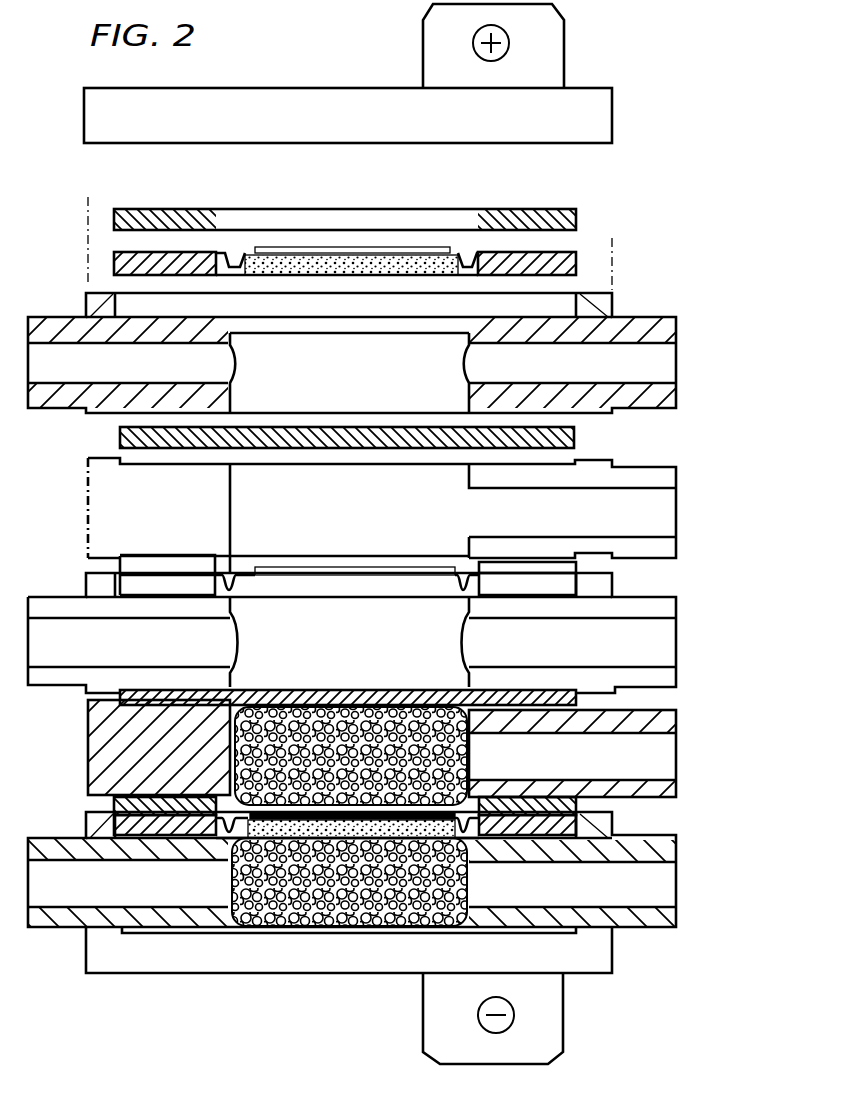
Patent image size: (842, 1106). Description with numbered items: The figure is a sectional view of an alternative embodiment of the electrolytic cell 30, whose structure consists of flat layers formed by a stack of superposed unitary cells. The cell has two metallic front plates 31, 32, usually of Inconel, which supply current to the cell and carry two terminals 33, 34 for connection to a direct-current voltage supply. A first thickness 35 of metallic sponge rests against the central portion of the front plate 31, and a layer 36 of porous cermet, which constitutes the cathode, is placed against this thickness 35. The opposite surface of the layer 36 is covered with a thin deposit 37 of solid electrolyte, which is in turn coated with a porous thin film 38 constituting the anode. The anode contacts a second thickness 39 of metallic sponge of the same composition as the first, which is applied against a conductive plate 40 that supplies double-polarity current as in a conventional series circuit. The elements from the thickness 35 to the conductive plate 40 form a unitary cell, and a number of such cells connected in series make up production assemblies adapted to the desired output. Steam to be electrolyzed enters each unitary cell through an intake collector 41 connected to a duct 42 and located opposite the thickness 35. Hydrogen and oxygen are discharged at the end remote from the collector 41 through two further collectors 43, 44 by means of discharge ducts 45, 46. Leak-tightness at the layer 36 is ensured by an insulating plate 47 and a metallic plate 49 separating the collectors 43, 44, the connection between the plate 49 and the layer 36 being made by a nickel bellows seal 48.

The electrolytic cell 30 is at (664, 947).
The metallic front plate 31 is at (138, 975).
The metallic front plate 32 is at (590, 103).
The terminal 33 is at (443, 1012).
The terminal 34 is at (430, 46).
The first thickness of metallic sponge 35 is at (308, 928).
The layer of porous cermet 36 is at (270, 277).
The thin deposit of solid electrolyte 37 is at (330, 277).
The porous thin film 38 is at (368, 247).
The second thickness of metallic sponge 39 is at (335, 707).
The conductive plate 40 is at (280, 449).
The intake collector 41 is at (68, 300).
The duct 42 is at (56, 890).
The collector 43 is at (648, 322).
The collector 44 is at (652, 714).
The discharge duct 45 is at (654, 877).
The discharge duct 46 is at (648, 740).
The insulating plate 47 is at (514, 213).
The bellows seal 48 is at (238, 252).
The metallic plate 49 is at (578, 262).